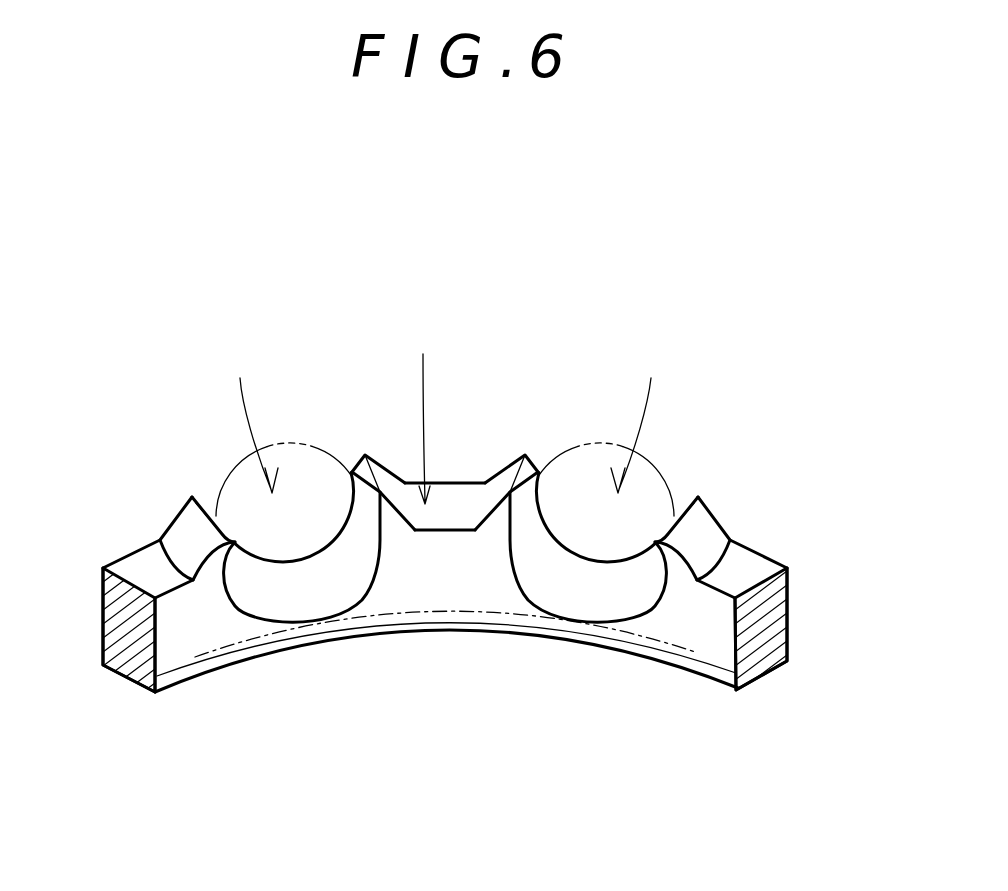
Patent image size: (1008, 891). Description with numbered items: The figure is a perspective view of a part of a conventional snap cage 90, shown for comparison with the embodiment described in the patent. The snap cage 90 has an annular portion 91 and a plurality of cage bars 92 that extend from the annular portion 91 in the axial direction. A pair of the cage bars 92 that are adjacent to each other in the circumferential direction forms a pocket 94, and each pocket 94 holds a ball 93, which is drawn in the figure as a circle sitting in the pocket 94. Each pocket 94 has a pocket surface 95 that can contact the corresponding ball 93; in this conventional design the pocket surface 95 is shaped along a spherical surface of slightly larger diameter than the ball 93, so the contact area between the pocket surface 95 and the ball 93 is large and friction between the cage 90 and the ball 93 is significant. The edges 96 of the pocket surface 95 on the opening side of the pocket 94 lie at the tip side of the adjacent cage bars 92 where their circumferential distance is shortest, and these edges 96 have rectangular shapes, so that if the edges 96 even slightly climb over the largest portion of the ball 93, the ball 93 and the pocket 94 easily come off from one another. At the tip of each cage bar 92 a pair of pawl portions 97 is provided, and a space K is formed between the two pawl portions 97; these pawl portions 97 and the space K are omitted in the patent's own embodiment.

The snap cage 90 is at (771, 554).
The annular portion 91 is at (322, 633).
The cage bar 92 is at (168, 610).
The ball 93 is at (231, 466).
The pocket 94 is at (445, 421).
The pocket surface 95 is at (308, 570).
The edge 96 is at (210, 512).
The pawl portion 97 is at (187, 518).
The space K is at (423, 414).